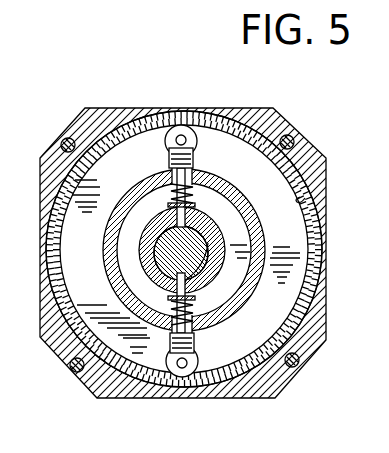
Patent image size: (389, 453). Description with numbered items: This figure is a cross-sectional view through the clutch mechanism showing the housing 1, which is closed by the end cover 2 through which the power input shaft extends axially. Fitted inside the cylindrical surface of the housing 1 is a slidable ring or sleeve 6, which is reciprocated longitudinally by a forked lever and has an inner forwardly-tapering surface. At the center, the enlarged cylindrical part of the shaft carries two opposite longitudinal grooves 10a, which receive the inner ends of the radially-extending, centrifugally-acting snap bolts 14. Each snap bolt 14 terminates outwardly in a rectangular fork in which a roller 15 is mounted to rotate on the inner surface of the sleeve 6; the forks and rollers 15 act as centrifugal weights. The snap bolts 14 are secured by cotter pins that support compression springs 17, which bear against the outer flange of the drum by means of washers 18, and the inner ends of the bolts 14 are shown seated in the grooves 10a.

The housing 1 is at (325, 159).
The end cover 2 is at (247, 137).
The slidable ring or sleeve 6 is at (303, 197).
The longitudinal grooves 10a is at (216, 241).
The snap bolts 14 is at (186, 212).
The roller 15 is at (197, 142).
The compression springs 17 is at (169, 191).
The washers 18 is at (167, 207).